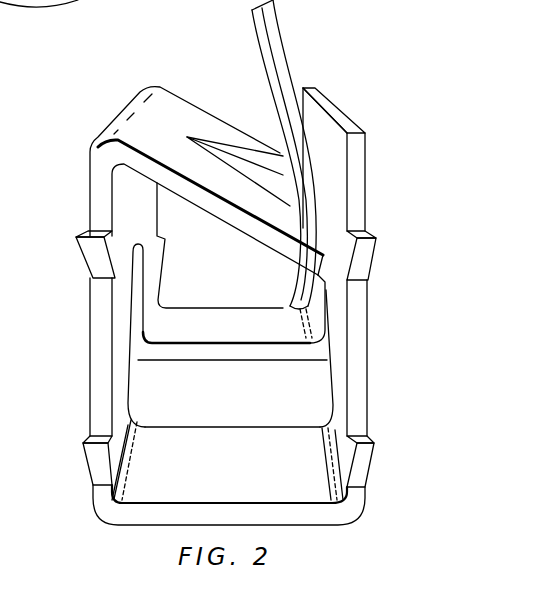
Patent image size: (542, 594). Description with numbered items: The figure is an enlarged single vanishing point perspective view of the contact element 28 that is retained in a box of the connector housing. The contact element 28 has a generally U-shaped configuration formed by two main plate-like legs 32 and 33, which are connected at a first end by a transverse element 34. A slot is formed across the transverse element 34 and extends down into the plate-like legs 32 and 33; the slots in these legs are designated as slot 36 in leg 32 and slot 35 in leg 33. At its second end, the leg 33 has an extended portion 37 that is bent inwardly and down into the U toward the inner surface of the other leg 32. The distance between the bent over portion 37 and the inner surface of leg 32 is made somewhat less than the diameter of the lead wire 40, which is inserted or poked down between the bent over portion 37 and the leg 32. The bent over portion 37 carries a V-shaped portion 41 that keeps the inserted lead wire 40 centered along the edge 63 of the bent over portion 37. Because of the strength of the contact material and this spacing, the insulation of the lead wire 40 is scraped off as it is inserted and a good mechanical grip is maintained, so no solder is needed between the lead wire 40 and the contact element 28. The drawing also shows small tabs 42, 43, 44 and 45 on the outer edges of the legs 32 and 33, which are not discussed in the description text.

The contact element 28 is at (77, 122).
The plate-like leg 32 is at (365, 362).
The plate-like leg 33 is at (100, 347).
The transverse element 34 is at (245, 337).
The slot 35 is at (137, 337).
The slot 36 is at (327, 327).
The extended portion 37 is at (217, 177).
The lead wire 40 is at (277, 33).
The V-shaped portion 41 is at (263, 173).
The upper right locking tab 42 is at (374, 238).
The lower right locking tab 43 is at (373, 453).
The upper left locking tab 44 is at (83, 240).
The lower left locking tab 45 is at (88, 450).
The edge 63 is at (322, 243).